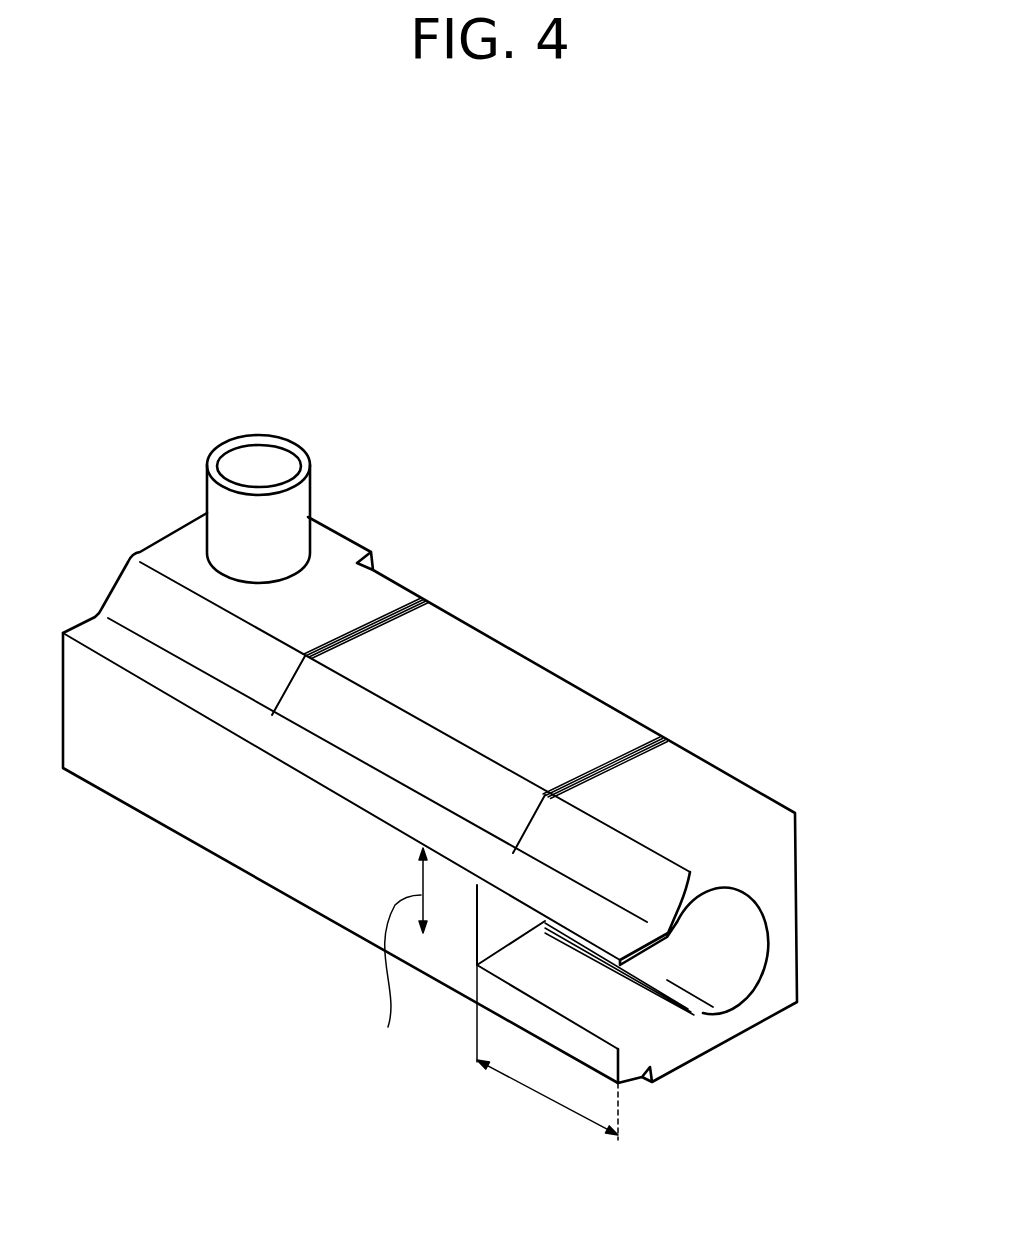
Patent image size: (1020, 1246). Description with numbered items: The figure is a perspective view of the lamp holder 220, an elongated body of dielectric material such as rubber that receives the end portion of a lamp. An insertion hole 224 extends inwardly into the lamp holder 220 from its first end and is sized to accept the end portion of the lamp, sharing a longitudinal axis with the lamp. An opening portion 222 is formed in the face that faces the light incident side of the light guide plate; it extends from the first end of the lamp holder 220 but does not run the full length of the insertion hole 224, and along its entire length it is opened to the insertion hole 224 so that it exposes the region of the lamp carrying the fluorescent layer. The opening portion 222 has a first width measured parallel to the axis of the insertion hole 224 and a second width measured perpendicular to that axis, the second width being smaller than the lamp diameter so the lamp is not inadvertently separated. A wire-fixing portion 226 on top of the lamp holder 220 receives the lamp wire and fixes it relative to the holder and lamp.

The lamp holder 220 is at (522, 624).
The opening portion 222 is at (583, 990).
The insertion hole 224 is at (736, 942).
The wire-fixing portion 226 is at (302, 497).